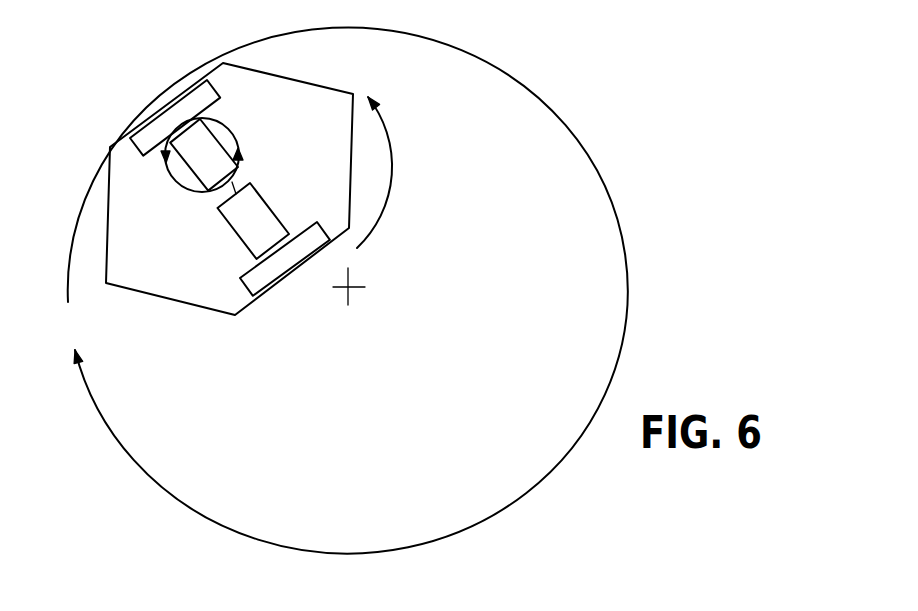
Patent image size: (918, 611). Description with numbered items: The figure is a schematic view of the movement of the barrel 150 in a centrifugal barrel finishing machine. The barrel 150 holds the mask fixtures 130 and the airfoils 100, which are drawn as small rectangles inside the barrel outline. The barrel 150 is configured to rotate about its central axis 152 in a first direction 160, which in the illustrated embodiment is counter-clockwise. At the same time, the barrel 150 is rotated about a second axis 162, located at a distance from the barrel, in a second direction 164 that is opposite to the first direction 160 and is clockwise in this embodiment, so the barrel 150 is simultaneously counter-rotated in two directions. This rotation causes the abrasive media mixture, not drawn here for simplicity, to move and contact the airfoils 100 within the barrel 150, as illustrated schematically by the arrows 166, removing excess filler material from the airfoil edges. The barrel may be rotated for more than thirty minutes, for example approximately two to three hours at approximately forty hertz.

The airfoil 100 is at (198, 160).
The mask fixture 130 is at (176, 108).
The barrel 150 is at (183, 303).
The central axis 152 is at (233, 187).
The first direction 160 is at (392, 163).
The second axis 162 is at (348, 293).
The second direction 164 is at (140, 463).
The arrows 166 is at (184, 188).